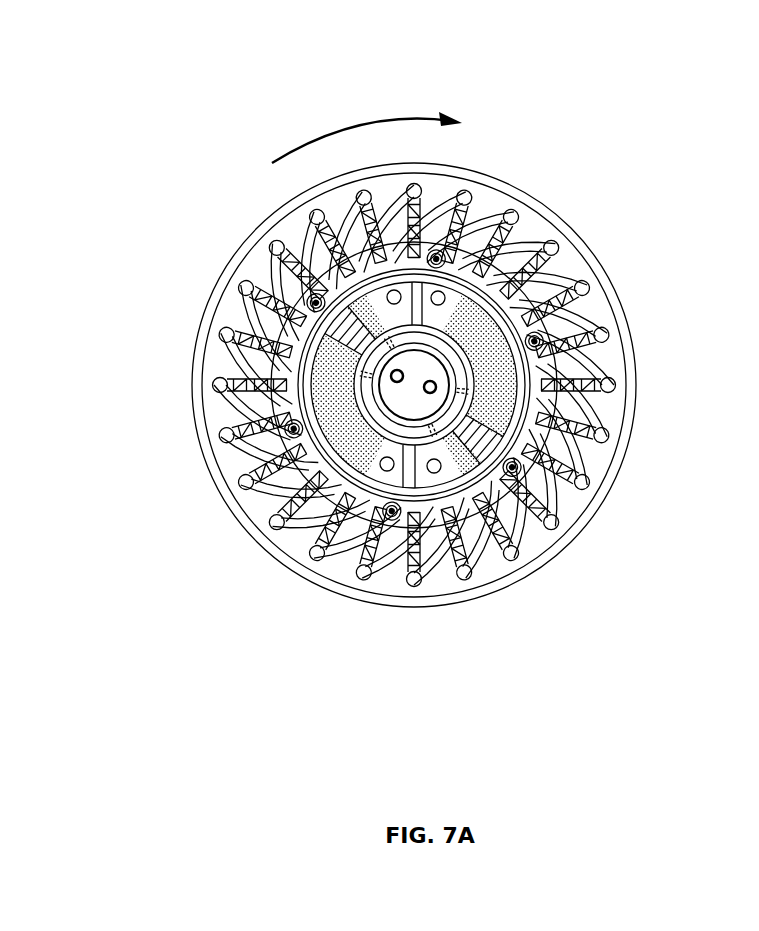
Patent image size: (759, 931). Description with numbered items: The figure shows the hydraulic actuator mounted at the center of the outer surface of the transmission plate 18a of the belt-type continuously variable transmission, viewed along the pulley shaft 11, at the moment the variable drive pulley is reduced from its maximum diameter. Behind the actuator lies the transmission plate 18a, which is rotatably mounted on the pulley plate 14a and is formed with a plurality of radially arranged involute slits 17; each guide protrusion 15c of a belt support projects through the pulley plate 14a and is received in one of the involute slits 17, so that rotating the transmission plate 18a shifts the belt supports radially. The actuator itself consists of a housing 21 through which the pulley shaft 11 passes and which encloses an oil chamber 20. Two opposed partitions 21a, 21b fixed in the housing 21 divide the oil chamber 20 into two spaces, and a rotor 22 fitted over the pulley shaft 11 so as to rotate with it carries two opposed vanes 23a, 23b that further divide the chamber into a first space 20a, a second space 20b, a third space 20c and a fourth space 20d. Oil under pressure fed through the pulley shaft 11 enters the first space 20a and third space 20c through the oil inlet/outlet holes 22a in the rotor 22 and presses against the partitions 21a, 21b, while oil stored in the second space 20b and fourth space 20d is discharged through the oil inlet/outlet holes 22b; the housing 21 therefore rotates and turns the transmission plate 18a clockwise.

The pulley shaft 11 is at (317, 443).
The pulley plate 14a is at (405, 603).
The guide protrusion 15c is at (522, 450).
The involute slit 17 is at (545, 500).
The transmission plate 18a is at (290, 223).
The oil chamber 20 is at (408, 371).
The first space 20a is at (440, 296).
The second space 20b is at (548, 330).
The third space 20c is at (473, 430).
The fourth space 20d is at (300, 405).
The housing 21 is at (290, 360).
The partition 21a is at (468, 341).
The partition 21b is at (426, 480).
The rotor 22 is at (505, 350).
The oil inlet/outlet hole 22a is at (436, 250).
The oil inlet/outlet hole 22b is at (528, 478).
The vane 23a is at (342, 343).
The vane 23b is at (466, 352).